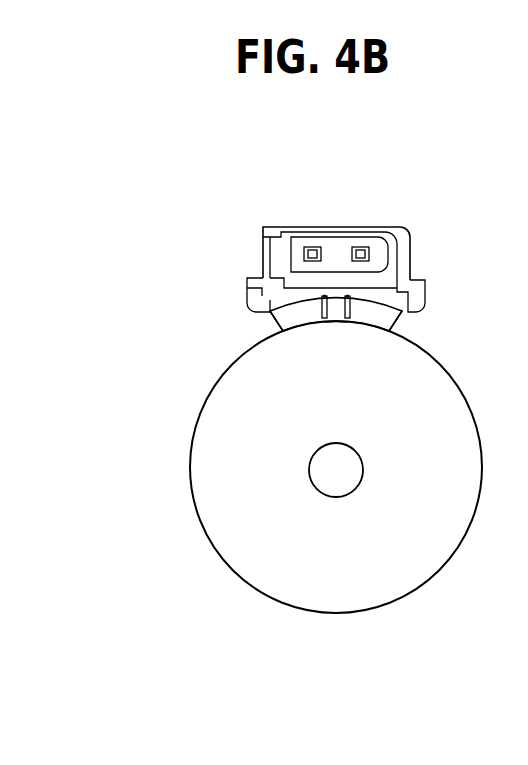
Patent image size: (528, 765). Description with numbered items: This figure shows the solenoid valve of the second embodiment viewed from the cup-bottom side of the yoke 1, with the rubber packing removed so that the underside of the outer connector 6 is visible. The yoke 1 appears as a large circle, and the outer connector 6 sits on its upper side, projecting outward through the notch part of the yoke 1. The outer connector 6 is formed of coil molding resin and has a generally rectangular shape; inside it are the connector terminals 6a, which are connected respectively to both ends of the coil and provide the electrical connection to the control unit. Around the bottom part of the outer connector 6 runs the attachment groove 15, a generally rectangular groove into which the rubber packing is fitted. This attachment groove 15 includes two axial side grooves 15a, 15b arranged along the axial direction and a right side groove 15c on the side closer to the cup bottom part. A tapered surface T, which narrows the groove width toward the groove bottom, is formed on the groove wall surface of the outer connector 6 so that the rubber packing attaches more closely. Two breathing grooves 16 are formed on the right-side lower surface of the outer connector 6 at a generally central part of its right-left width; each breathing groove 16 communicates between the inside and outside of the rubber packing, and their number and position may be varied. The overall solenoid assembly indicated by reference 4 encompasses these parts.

The yoke 1 is at (468, 405).
The connector unit 4 is at (438, 197).
The outer connector 6 is at (410, 262).
The connector terminals 6a is at (360, 247).
The attachment groove 15 is at (284, 300).
The axial side groove 15a is at (281, 333).
The axial side groove 15b is at (392, 330).
The right side groove 15c is at (332, 322).
The breathing groove 16 is at (350, 298).
The tapered surface T is at (275, 327).